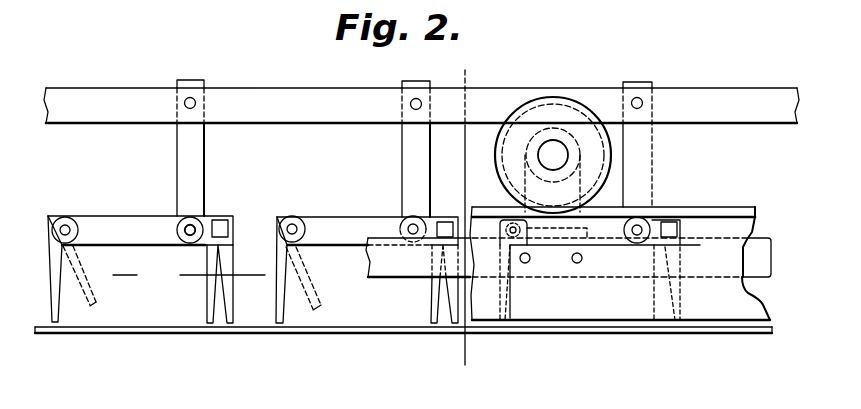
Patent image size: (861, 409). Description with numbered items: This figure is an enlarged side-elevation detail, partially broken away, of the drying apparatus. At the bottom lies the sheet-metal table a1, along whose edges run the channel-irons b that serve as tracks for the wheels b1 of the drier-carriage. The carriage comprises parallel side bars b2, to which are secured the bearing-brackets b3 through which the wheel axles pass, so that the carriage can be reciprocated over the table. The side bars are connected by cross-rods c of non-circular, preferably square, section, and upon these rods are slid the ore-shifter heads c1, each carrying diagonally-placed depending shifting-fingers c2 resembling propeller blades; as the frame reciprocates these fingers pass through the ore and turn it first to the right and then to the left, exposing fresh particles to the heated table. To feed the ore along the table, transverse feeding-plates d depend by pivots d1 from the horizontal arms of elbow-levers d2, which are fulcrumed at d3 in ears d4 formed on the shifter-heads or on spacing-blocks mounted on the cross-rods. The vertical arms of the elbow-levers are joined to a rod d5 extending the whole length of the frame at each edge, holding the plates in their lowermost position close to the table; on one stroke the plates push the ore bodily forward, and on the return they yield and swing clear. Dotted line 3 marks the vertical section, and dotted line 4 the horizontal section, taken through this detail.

The sheet-metal table a1 is at (350, 330).
The channel-iron b is at (698, 225).
The wheel b1 is at (553, 136).
The side bar b2 is at (768, 293).
The bearing-bracket b3 is at (570, 151).
The cross-rod c is at (229, 227).
The ore-shifter head c1 is at (216, 215).
The shifting-finger c2 is at (245, 300).
The feeding-plate d is at (57, 277).
The pivot d1 is at (68, 221).
The elbow-lever d2 is at (192, 162).
The fulcrum d3 is at (405, 222).
The ear d4 is at (193, 243).
The rod d5 is at (258, 100).
The section line 3 3 is at (463, 222).
The section line 4 4 is at (189, 269).